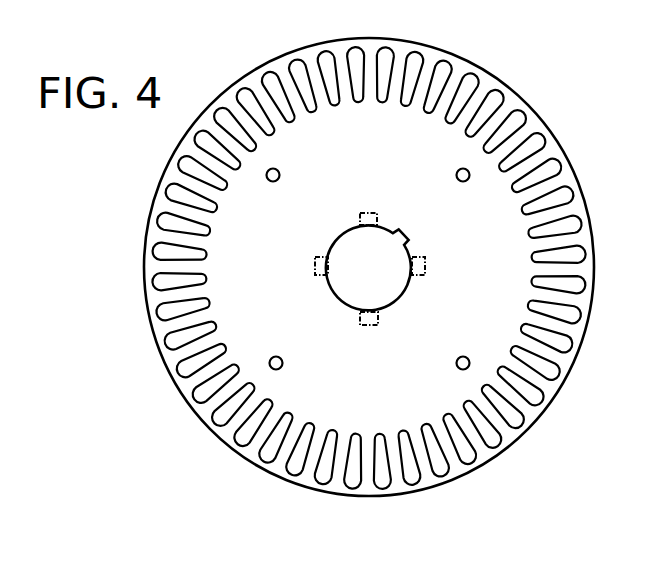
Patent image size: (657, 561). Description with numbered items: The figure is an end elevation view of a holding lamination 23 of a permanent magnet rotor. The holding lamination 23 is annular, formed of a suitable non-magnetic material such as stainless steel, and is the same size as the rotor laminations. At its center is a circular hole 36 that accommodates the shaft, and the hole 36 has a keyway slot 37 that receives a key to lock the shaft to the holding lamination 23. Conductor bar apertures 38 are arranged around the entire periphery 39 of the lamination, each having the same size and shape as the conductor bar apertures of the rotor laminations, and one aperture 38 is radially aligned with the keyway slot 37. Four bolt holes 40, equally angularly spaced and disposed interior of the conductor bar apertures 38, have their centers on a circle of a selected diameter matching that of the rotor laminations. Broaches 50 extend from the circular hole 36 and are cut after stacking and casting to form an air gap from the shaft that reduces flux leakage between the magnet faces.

The holding lamination 23 is at (320, 503).
The circular hole 36 is at (337, 237).
The keyway slot 37 is at (400, 232).
The conductor bar apertures 38 is at (400, 79).
The periphery 39 is at (577, 177).
The bolt holes 40 is at (279, 181).
The broaches 50 is at (420, 276).